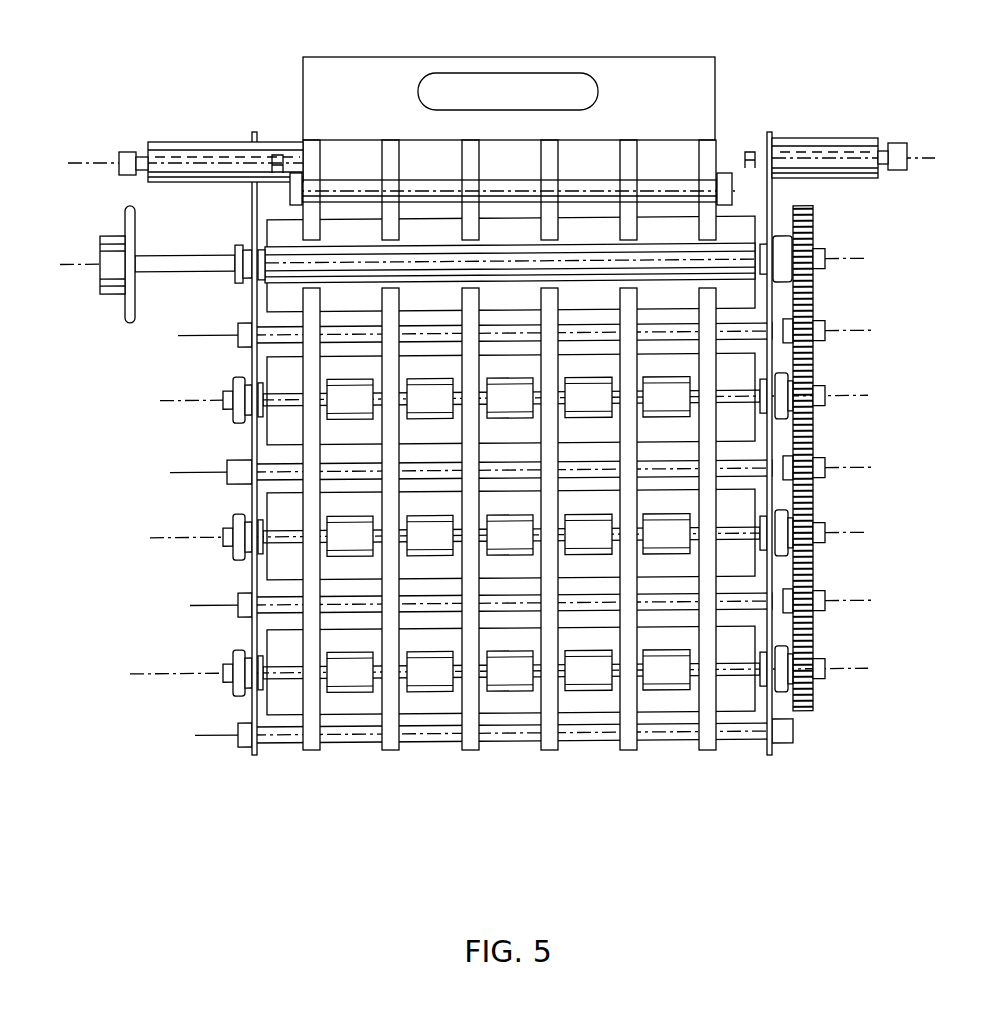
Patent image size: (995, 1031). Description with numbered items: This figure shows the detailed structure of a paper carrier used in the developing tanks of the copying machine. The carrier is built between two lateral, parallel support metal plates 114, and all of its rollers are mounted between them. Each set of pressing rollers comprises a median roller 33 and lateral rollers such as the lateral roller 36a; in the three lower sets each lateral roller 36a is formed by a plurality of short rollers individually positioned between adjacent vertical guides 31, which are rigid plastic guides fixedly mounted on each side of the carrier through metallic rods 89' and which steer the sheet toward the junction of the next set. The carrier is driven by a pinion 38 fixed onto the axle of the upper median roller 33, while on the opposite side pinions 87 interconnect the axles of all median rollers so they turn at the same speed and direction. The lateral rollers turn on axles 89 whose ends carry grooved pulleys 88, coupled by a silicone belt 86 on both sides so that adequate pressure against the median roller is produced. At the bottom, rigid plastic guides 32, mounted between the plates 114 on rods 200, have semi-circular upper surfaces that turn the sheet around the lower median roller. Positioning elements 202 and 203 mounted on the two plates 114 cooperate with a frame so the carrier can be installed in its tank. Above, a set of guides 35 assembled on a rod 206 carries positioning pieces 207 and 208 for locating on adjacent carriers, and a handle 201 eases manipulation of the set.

The handle 201 is at (518, 68).
The guide 35 is at (470, 155).
The positioning element 202 is at (183, 153).
The positioning element 203 is at (818, 150).
The positioning piece 207 is at (280, 158).
The positioning piece 208 is at (730, 152).
The rod 206 is at (357, 202).
The pinion 38 is at (118, 283).
The pinion 87 is at (815, 300).
The axle 89 is at (849, 686).
The metallic rod 89' is at (855, 442).
The pulley 88 is at (226, 393).
The silicone belt 86 is at (240, 562).
The vertical guide 31 is at (309, 632).
The median roller 33 is at (287, 707).
The lateral support metal plate 114 is at (254, 756).
The guide 32 is at (312, 745).
The rod 200 is at (287, 745).
The lateral roller 36a is at (665, 668).